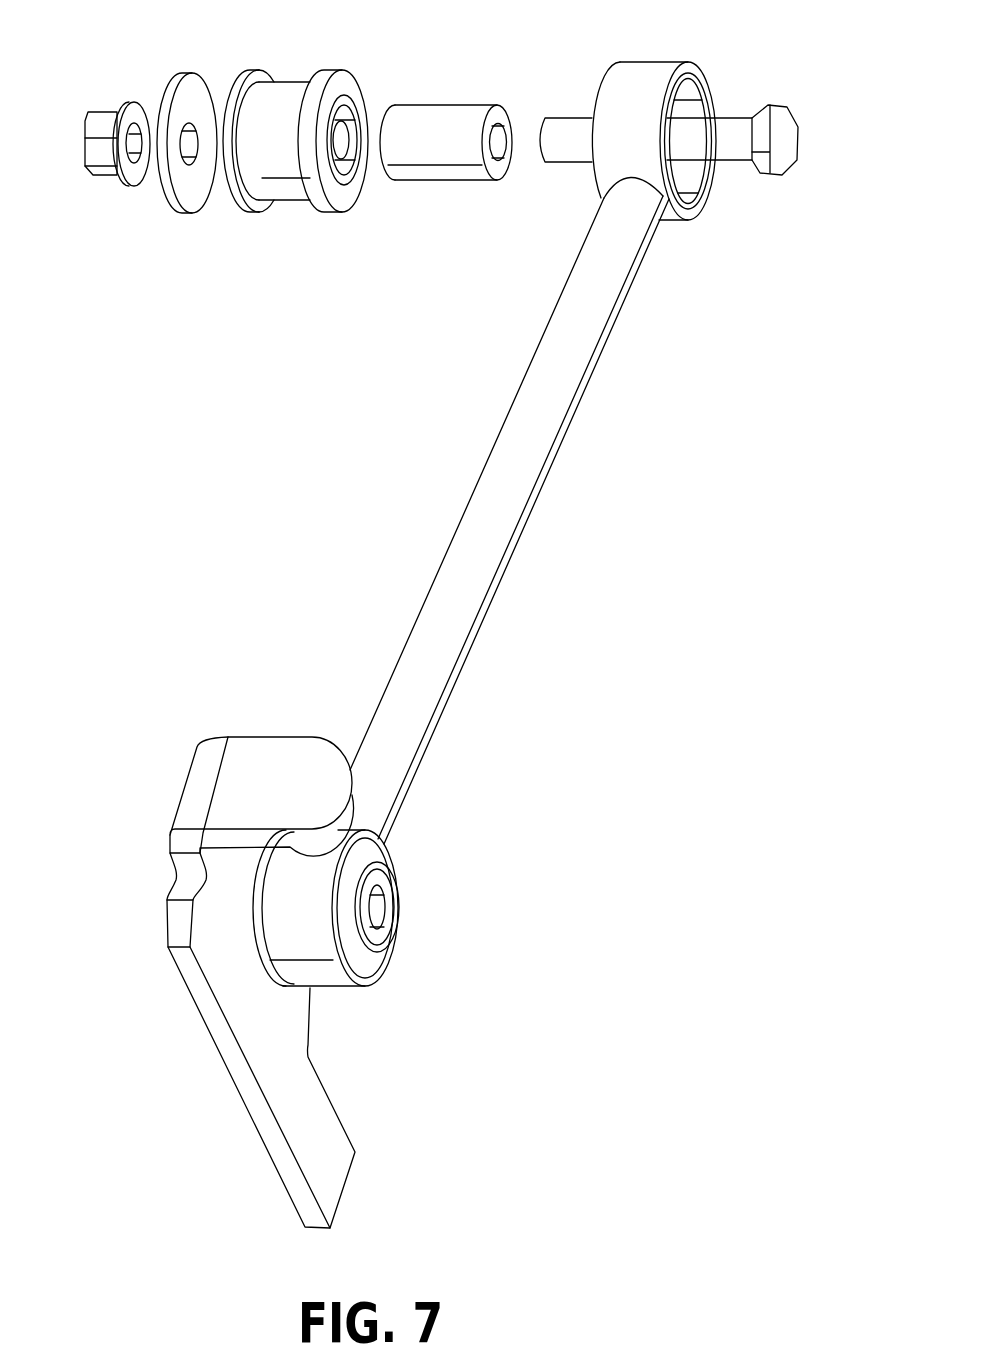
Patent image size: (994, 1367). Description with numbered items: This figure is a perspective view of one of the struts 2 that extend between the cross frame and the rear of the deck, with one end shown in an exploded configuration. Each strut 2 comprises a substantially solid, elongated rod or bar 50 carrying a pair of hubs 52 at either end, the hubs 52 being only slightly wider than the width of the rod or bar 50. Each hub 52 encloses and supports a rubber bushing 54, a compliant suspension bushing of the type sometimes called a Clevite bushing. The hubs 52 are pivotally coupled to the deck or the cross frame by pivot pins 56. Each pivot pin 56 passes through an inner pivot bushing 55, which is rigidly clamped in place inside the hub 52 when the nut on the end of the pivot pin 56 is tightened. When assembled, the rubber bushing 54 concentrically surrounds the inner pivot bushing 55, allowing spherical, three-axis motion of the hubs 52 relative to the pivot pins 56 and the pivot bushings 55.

The strut 2 is at (441, 614).
The rod or bar 50 is at (502, 475).
The hub 52 is at (640, 77).
The rubber bushing 54 is at (277, 95).
The inner pivot bushing 55 is at (422, 117).
The pivot pin 56 is at (730, 127).